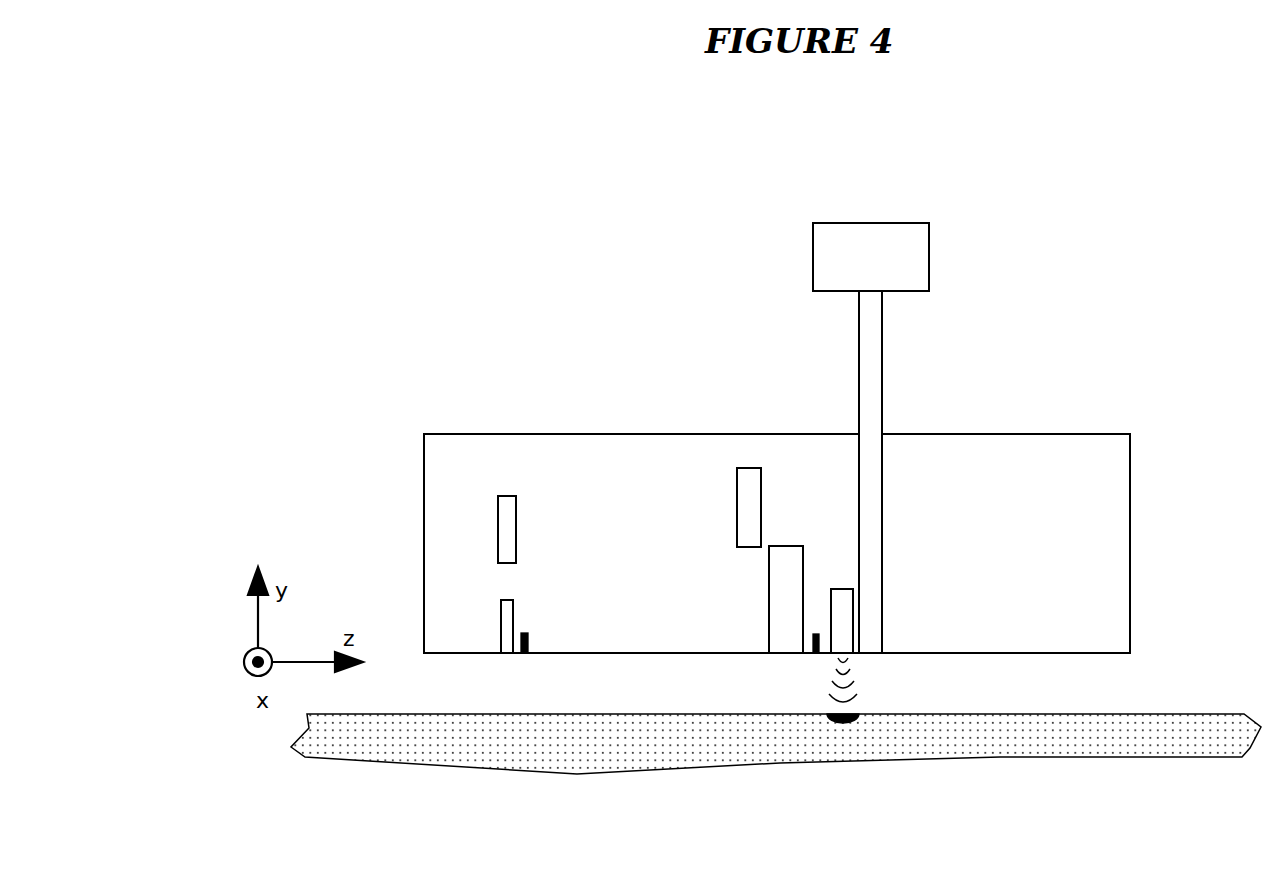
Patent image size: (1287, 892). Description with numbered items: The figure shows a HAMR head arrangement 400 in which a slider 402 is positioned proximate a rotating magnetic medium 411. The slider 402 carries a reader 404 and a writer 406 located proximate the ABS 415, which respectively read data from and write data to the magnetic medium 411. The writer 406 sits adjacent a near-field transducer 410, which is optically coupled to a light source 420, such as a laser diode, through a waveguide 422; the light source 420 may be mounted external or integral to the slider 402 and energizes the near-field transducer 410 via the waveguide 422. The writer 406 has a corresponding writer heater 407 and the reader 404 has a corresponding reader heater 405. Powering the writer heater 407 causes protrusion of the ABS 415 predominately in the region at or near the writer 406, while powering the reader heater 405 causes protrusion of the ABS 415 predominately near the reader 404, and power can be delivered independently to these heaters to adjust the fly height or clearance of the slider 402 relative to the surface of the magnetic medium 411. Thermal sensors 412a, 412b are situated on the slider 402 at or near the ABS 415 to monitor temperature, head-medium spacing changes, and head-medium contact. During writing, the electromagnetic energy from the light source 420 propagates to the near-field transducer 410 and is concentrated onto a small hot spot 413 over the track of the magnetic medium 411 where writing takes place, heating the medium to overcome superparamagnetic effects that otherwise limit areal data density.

The HAMR head arrangement 400 is at (510, 266).
The slider 402 is at (1165, 406).
The reader 404 is at (501, 619).
The reader heater 405 is at (517, 531).
The writer 406 is at (769, 610).
The writer heater 407 is at (737, 515).
The near-field transducer 410 is at (841, 589).
The magnetic medium 411 is at (1192, 713).
The thermal sensor 412a is at (816, 654).
The thermal sensor 412b is at (521, 656).
The hot spot 413 is at (840, 722).
The ABS 415 is at (1014, 660).
The light source 420 is at (930, 250).
The waveguide 422 is at (883, 368).